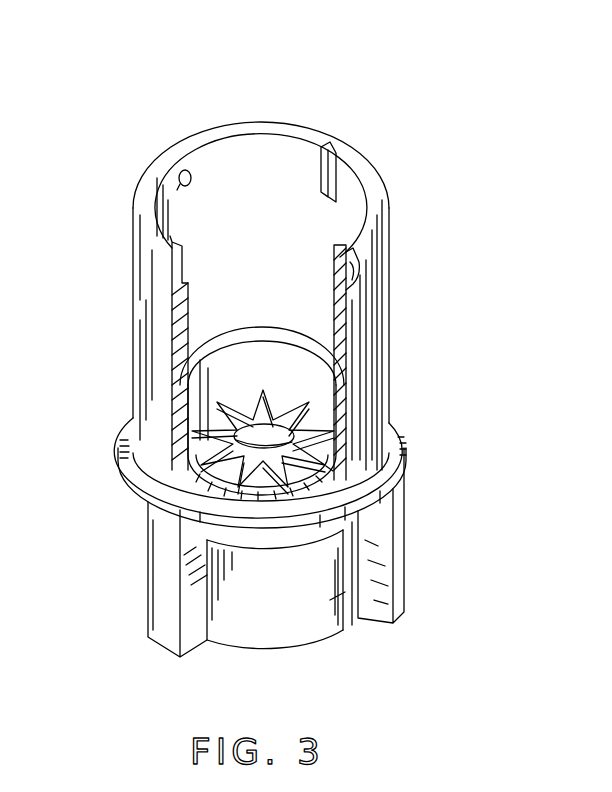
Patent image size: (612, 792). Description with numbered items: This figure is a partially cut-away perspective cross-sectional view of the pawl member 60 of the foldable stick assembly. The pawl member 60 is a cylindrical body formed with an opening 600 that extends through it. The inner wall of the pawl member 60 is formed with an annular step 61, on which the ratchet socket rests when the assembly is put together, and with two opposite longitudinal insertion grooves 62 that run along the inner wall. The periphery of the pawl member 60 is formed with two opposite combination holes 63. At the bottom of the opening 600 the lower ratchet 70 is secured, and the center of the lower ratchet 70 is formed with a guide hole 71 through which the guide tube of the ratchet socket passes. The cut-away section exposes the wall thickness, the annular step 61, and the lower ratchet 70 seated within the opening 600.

The opening 600 is at (254, 165).
The longitudinal insertion groove 62 is at (322, 176).
The combination hole 63 is at (188, 182).
The annular step 61 is at (216, 343).
The lower ratchet 70 is at (302, 406).
The guide hole 71 is at (245, 431).
The pawl member 60 is at (343, 624).